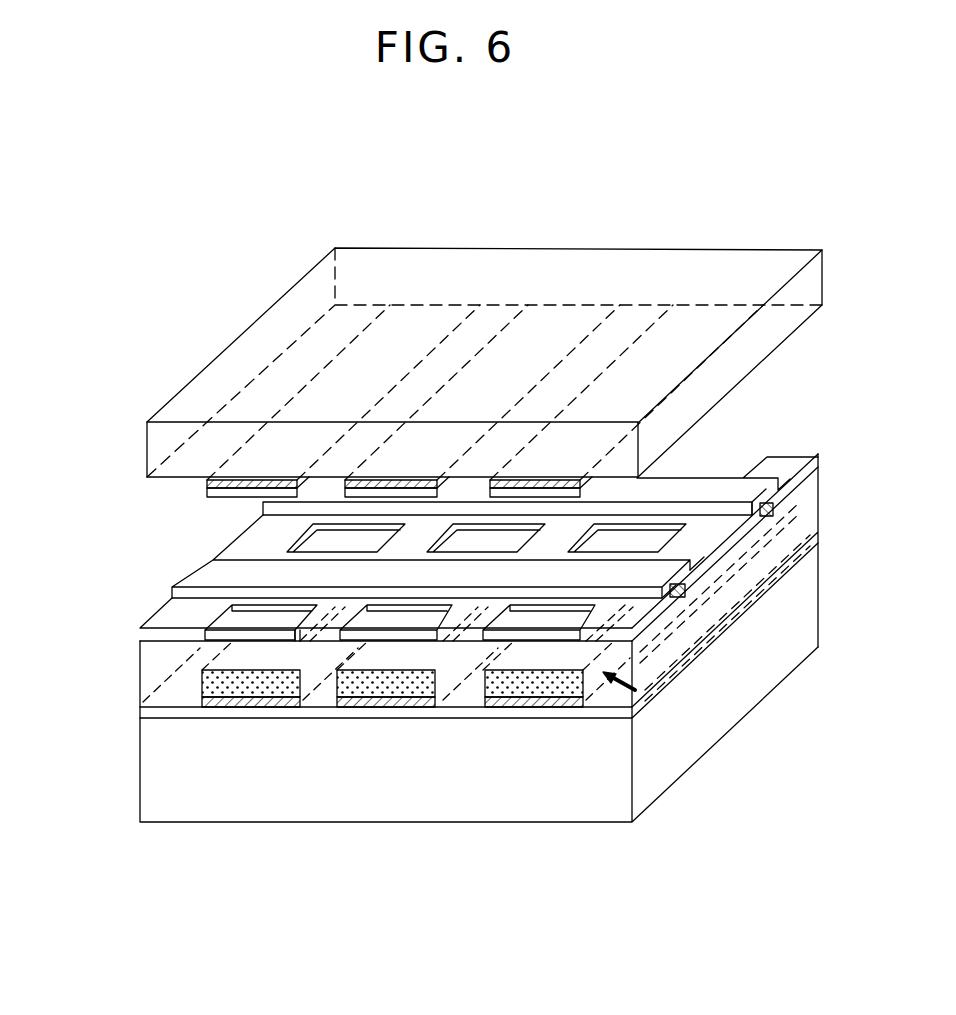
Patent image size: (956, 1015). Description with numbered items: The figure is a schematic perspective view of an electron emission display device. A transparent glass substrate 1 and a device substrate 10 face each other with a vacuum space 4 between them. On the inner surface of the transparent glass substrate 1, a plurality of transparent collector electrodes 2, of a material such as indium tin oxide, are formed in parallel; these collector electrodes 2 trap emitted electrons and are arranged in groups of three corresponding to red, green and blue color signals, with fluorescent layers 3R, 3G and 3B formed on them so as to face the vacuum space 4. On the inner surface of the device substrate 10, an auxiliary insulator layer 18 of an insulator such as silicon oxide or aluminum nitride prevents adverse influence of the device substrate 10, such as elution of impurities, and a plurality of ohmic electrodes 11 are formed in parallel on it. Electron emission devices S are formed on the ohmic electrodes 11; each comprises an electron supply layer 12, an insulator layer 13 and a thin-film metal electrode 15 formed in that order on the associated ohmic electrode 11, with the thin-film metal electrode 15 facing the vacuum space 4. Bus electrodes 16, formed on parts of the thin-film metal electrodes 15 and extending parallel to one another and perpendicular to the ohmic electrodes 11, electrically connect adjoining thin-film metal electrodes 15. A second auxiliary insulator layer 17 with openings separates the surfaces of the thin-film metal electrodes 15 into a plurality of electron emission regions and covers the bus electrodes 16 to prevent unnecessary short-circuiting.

The transparent glass substrate 1 is at (300, 292).
The transparent collector electrode 2 is at (205, 485).
The red fluorescent layer 3R is at (237, 492).
The green fluorescent layer 3G is at (400, 484).
The blue fluorescent layer 3B is at (552, 490).
The vacuum space 4 is at (783, 408).
The device substrate 10 is at (143, 752).
The ohmic electrode 11 is at (230, 707).
The electron supply layer 12 is at (515, 707).
The insulator layer 13 is at (142, 662).
The thin-film metal electrode 15 is at (297, 641).
The bus electrode 16 is at (677, 593).
The second auxiliary insulator layer 17 is at (150, 623).
The auxiliary insulator layer 18 is at (140, 715).
The electron emission device S is at (635, 690).